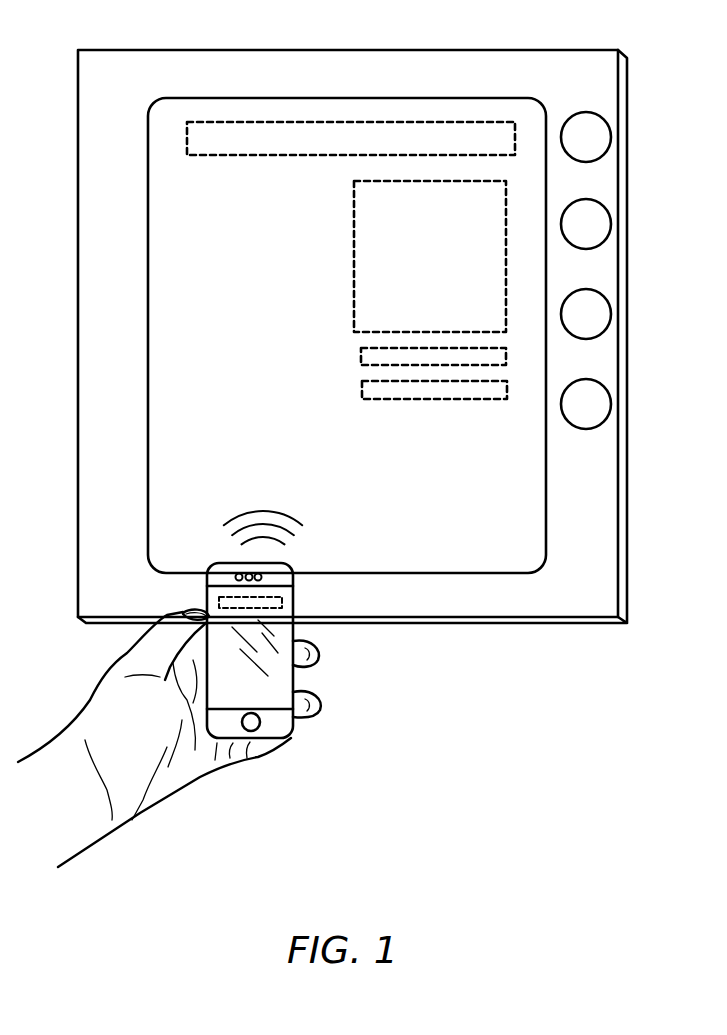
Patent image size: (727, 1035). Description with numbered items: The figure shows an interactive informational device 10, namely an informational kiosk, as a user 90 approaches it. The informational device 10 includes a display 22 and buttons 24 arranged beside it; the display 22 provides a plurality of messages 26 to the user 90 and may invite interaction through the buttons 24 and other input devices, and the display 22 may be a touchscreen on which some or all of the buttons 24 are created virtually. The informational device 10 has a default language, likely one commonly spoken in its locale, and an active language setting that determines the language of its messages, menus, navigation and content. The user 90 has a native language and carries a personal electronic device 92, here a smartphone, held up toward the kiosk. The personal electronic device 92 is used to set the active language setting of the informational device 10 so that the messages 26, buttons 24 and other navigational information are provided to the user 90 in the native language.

The interactive informational device 10 is at (604, 656).
The display 22 is at (443, 98).
The buttons 24 is at (611, 212).
The messages 26 is at (353, 252).
The user 90 is at (140, 813).
The personal electronic device 92 is at (292, 738).